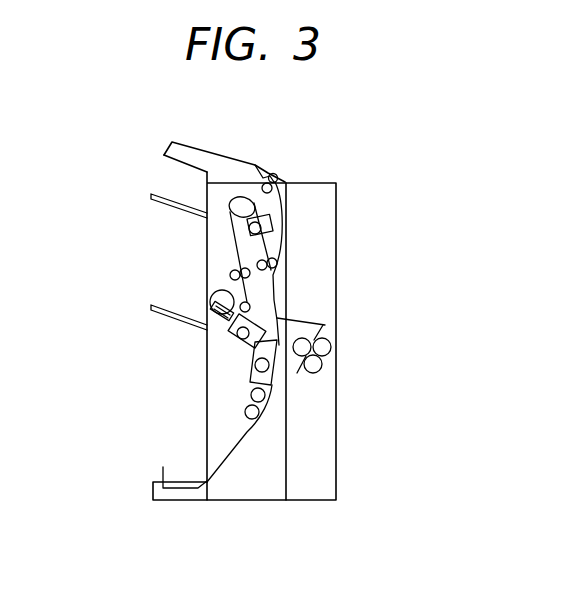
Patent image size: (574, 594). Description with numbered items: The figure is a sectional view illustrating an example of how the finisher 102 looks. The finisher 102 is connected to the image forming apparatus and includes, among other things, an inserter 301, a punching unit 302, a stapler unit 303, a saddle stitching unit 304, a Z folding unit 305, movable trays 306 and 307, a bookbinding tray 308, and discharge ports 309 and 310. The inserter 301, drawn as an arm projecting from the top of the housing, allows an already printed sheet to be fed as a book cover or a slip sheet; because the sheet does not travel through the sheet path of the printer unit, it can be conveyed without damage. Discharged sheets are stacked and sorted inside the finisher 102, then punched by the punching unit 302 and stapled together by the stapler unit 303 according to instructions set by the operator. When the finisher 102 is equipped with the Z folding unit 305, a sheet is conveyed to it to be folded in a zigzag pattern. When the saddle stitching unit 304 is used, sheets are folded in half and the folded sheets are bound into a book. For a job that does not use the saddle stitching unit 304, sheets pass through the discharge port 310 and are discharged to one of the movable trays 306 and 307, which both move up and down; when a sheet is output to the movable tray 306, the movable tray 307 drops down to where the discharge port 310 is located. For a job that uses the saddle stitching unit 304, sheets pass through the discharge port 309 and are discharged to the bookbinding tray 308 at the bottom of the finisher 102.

The finisher 102 is at (247, 493).
The inserter 301 is at (205, 150).
The punching unit 302 is at (272, 222).
The stapler unit 303 is at (235, 340).
The saddle stitching unit 304 is at (275, 385).
The Z folding unit 305 is at (330, 338).
The movable tray 306 is at (150, 198).
The movable tray 307 is at (150, 307).
The bookbinding tray 308 is at (152, 488).
The discharge port 309 is at (206, 474).
The discharge port 310 is at (205, 283).